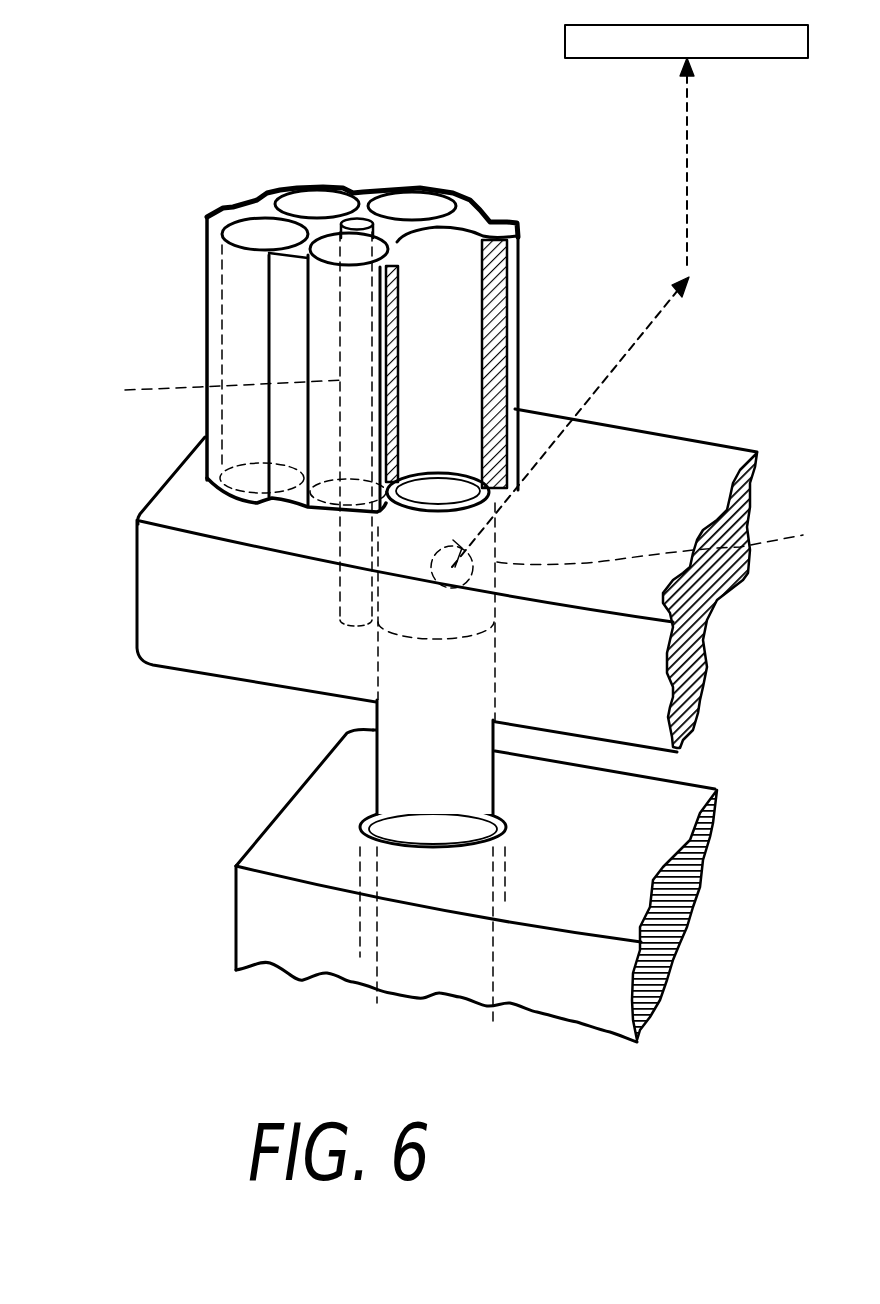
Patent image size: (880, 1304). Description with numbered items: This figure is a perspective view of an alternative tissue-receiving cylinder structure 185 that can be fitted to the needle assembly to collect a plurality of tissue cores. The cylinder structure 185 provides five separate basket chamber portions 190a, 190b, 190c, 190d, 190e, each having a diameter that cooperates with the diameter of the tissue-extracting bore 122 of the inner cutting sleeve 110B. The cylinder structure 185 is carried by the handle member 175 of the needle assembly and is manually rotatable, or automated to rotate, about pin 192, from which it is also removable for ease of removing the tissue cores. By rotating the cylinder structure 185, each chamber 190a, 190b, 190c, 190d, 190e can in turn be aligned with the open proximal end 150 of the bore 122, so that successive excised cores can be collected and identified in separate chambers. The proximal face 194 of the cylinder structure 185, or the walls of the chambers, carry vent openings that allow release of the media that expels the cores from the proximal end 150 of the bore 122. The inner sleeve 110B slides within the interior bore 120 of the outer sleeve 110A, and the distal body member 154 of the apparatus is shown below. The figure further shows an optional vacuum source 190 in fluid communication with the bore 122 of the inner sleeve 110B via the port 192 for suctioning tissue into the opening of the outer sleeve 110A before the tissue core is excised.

The tissue-receiving cylinder structure 185 is at (207, 217).
The basket chamber portion 190a is at (468, 243).
The basket chamber portion 190b is at (327, 263).
The basket chamber portion 190c is at (243, 243).
The basket chamber portion 190d is at (315, 207).
The basket chamber portion 190e is at (413, 205).
The proximal face 194 is at (462, 202).
The pin / port 192 is at (200, 387).
The proximal end of bore 150 is at (430, 498).
The handle member 175 is at (607, 447).
The tissue-extracting bore 122 is at (420, 494).
The inner cutting sleeve 110B is at (380, 712).
The outer sleeve 110A is at (365, 814).
The interior bore 120 is at (470, 826).
The distal body member 154 is at (680, 793).
The vacuum source 190 is at (630, 296).